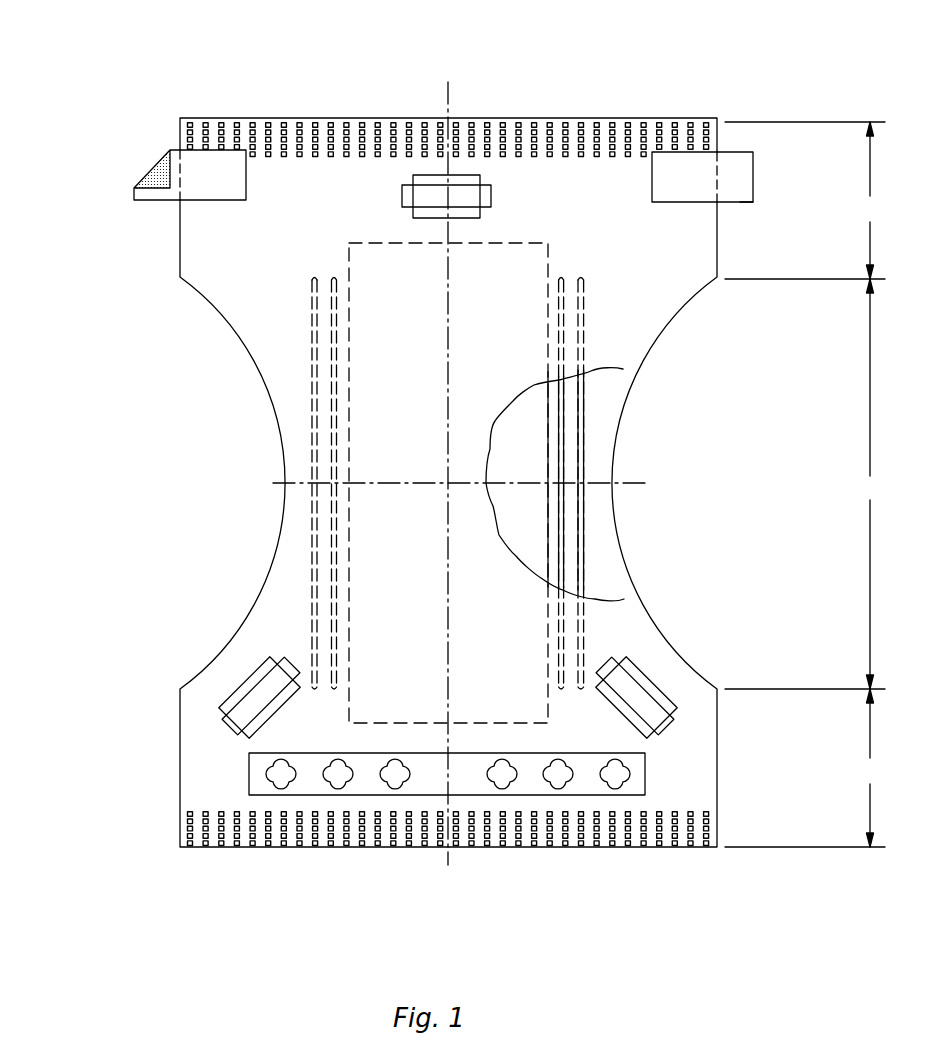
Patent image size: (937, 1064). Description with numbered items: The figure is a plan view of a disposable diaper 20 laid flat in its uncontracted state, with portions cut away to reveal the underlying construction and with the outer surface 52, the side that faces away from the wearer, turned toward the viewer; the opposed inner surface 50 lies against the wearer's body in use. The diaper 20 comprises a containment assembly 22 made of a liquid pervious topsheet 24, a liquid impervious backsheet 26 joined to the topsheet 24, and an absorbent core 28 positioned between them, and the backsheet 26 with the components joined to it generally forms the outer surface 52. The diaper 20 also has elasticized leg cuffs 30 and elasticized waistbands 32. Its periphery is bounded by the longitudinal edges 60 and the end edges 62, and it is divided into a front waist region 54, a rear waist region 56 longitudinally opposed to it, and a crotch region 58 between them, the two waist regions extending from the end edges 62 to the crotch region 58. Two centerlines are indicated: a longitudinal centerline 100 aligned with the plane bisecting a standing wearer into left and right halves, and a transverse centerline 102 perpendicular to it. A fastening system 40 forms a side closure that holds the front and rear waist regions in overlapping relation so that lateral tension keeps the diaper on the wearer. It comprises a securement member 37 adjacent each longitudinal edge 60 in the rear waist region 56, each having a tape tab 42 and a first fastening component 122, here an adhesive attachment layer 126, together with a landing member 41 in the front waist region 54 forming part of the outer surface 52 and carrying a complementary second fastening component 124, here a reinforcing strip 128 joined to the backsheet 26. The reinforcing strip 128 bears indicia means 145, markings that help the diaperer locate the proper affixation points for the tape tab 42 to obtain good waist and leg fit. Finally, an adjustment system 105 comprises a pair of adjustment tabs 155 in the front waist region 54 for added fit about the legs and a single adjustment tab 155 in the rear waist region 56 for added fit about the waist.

The diaper 20 is at (203, 72).
The containment assembly 22 is at (392, 236).
The liquid pervious topsheet 24 is at (586, 484).
The liquid impervious backsheet 26 is at (203, 262).
The absorbent core 28 is at (525, 423).
The elasticized leg cuffs 30 is at (583, 563).
The elasticized waistbands 32 is at (630, 133).
The securement member 37 is at (730, 197).
The fastening system 40 is at (780, 132).
The landing member 41 is at (468, 783).
The tape tab 42 is at (745, 160).
The inner surface 50 is at (288, 493).
The outer surface 52 is at (212, 237).
The front waist region 54 is at (806, 768).
The rear waist region 56 is at (806, 200).
The crotch region 58 is at (806, 484).
The longitudinal edges 60 is at (257, 343).
The end edges 62 is at (323, 118).
The longitudinal centerline 100 is at (448, 90).
The transverse centerline 102 is at (640, 483).
The adjustment system 105 is at (452, 396).
The first fastening component 122 is at (129, 164).
The second fastening component 124 is at (546, 793).
The adhesive attachment layer 126 is at (152, 168).
The reinforcing strip 128 is at (638, 777).
The indicia means 145 is at (397, 788).
The adjustment tab 155 is at (490, 176).